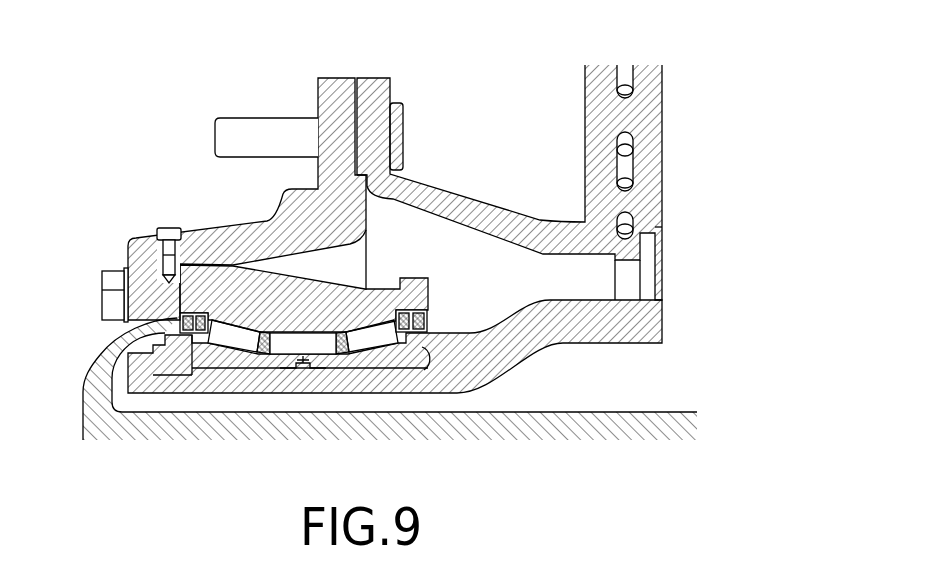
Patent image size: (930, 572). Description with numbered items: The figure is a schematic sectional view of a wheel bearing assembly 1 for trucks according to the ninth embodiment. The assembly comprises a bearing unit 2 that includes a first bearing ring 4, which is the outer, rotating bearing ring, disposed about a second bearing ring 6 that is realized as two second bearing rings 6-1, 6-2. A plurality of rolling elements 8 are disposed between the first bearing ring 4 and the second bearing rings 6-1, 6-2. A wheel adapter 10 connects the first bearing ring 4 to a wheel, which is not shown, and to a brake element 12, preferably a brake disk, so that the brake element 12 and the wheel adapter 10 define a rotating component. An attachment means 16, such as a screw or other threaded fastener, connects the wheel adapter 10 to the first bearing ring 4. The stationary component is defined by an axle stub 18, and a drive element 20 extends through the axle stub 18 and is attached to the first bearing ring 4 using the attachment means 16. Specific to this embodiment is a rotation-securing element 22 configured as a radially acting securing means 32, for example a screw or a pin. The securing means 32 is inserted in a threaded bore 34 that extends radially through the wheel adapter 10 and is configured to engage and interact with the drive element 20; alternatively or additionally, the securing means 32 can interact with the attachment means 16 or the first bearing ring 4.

The wheel bearing assembly 1 is at (362, 243).
The bearing unit 2 is at (321, 273).
The first bearing ring 4 is at (369, 308).
The second bearing ring 6 is at (330, 368).
The second bearing ring 6-1 is at (393, 357).
The second bearing ring 6-2 is at (228, 360).
The rolling elements 8 is at (245, 335).
The wheel adapter 10 is at (355, 219).
The brake element 12 is at (466, 200).
The attachment means 16 is at (110, 278).
The axle stub 18 is at (556, 337).
The drive element 20 is at (95, 412).
The rotation-securing element 22 is at (254, 199).
The securing means 32 is at (170, 230).
The threaded bore 34 is at (173, 258).